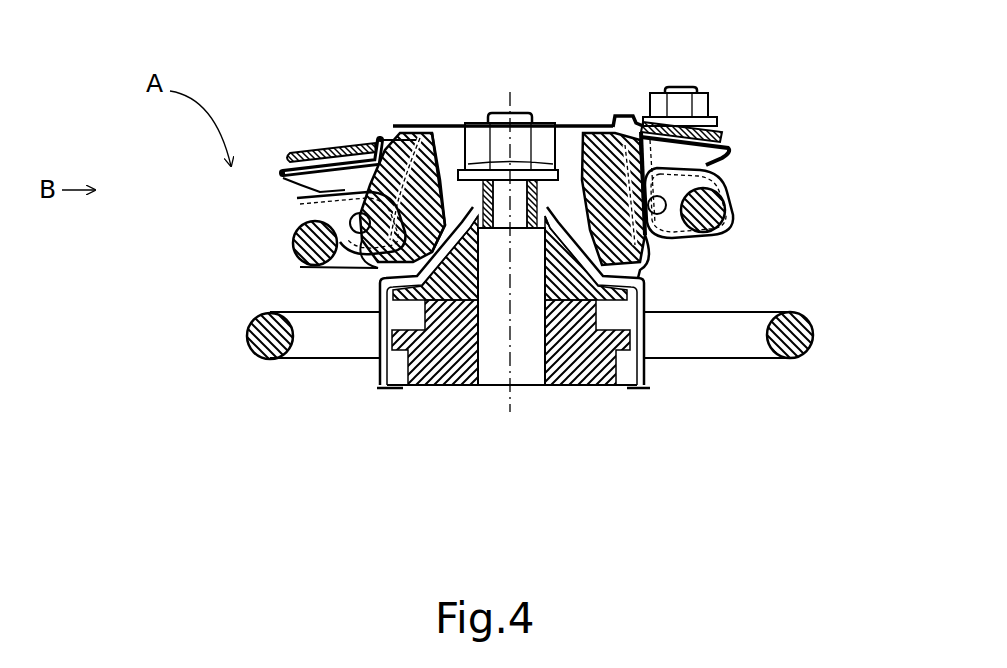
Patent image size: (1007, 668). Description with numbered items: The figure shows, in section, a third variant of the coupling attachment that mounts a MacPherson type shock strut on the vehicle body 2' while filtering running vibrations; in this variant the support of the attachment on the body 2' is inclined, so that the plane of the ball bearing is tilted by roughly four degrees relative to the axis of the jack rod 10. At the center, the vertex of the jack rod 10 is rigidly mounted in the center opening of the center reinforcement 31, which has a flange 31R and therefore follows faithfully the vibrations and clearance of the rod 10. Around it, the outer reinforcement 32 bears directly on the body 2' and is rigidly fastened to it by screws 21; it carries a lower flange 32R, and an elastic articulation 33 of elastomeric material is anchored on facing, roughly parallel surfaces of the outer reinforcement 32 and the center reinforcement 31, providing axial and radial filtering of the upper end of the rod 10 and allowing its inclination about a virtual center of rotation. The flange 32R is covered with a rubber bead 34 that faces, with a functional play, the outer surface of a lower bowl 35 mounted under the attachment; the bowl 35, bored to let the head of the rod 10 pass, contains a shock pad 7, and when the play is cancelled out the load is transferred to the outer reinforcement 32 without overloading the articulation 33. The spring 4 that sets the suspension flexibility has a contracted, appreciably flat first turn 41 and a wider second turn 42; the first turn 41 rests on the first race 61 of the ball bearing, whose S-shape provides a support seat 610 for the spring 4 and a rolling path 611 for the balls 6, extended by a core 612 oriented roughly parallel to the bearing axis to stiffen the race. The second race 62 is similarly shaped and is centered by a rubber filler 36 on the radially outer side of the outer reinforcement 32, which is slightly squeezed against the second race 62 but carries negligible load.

The body 2' is at (504, 89).
The spring 4 is at (808, 355).
The balls 6 is at (368, 263).
The shock pad 7 is at (427, 390).
The jack rod 10 is at (533, 345).
The screws 21 is at (720, 127).
The center reinforcement 31 is at (450, 126).
The flange 31R is at (567, 126).
The outer reinforcement 32 is at (290, 176).
The flange 32R is at (378, 281).
The elastic articulation 33 is at (400, 126).
The rubber bead 34 is at (640, 273).
The lower bowl 35 is at (378, 372).
The filler 36 is at (640, 260).
The first turn 41 is at (285, 257).
The second turn 42 is at (262, 342).
The first race 61 is at (290, 223).
The second race 62 is at (280, 202).
The support seat 610 is at (740, 193).
The rolling path 611 is at (640, 247).
The core 612 is at (730, 210).